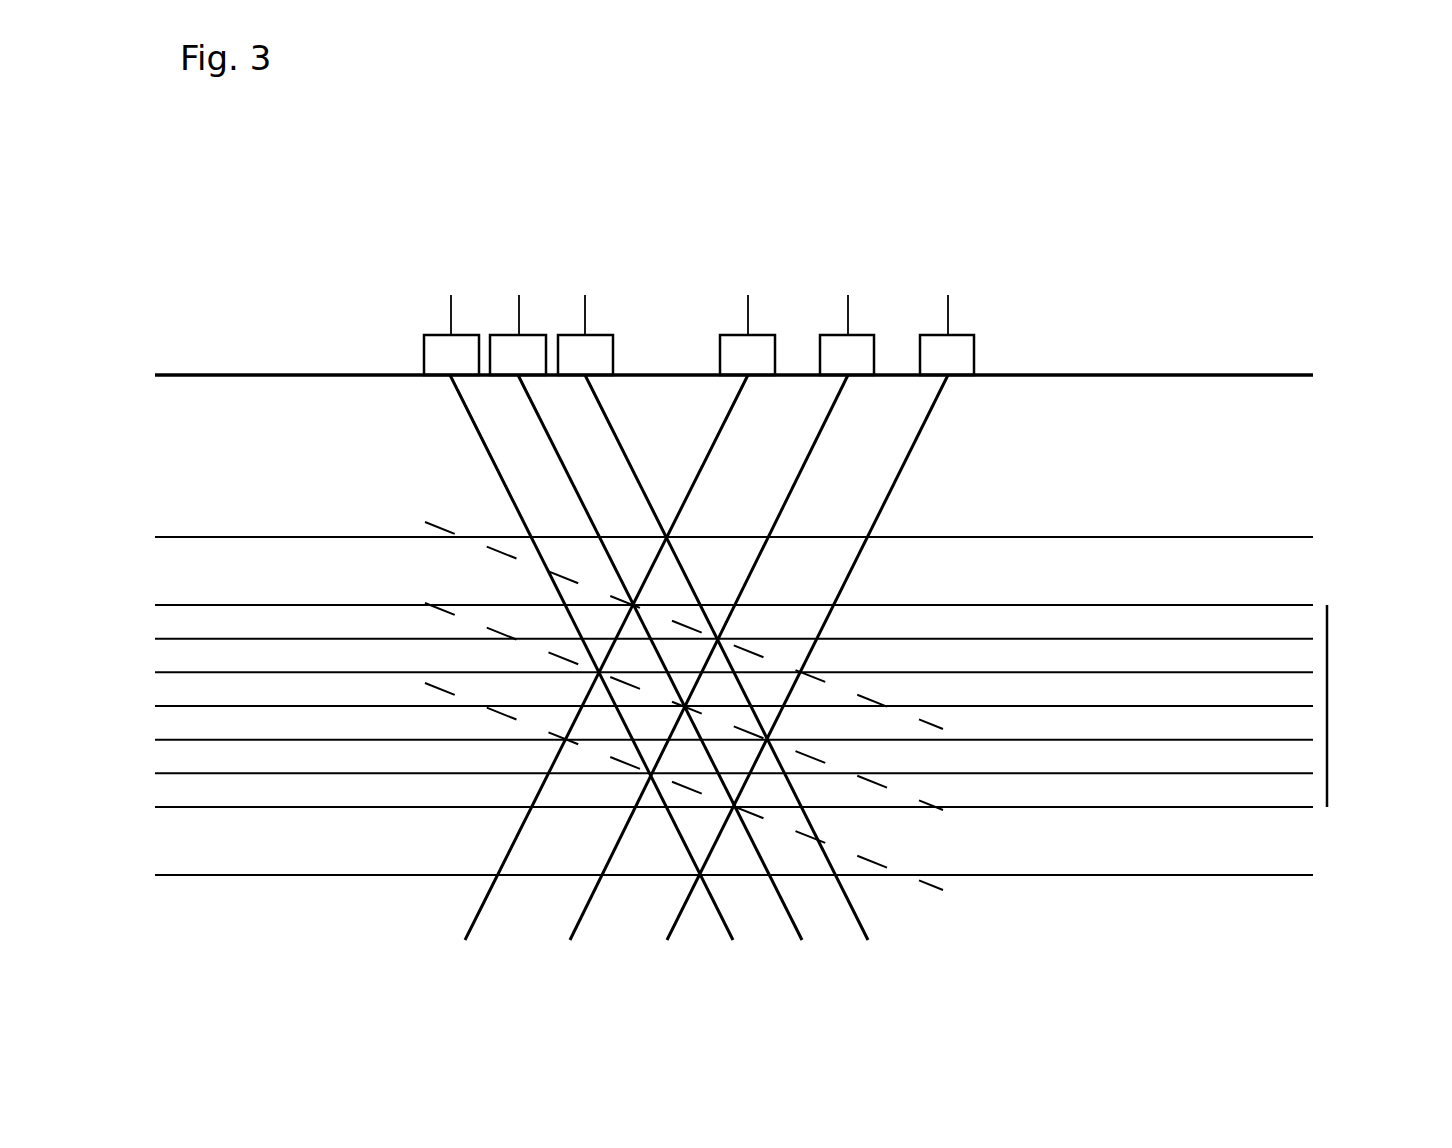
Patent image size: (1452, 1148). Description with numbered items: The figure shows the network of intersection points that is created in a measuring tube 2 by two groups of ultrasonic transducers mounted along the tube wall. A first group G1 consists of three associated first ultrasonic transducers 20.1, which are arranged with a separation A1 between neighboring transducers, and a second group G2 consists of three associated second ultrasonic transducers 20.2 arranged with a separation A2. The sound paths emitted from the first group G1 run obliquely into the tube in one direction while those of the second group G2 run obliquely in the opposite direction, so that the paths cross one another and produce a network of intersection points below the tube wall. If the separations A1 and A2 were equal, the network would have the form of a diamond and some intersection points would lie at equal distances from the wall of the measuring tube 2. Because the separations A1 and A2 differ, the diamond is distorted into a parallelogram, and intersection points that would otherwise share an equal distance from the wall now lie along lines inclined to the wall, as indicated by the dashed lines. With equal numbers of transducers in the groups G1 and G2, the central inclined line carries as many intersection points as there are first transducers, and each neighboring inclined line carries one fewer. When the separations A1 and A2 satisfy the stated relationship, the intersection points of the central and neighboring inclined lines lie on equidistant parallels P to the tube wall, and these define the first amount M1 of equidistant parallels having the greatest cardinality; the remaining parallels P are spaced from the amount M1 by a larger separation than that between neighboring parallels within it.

The measuring tube 2 is at (1232, 375).
The first ultrasonic transducers 20.1 is at (425, 320).
The second ultrasonic transducers 20.2 is at (990, 320).
The separation of the first ultrasonic transducers A1 is at (518, 299).
The separation of the second ultrasonic transducers A2 is at (848, 300).
The first group of associated first ultrasonic transducers G1 is at (587, 242).
The second group of associated second ultrasonic transducers G2 is at (882, 242).
The equidistant parallel P is at (1260, 535).
The first amount of equidistant parallels M1 is at (778, 706).